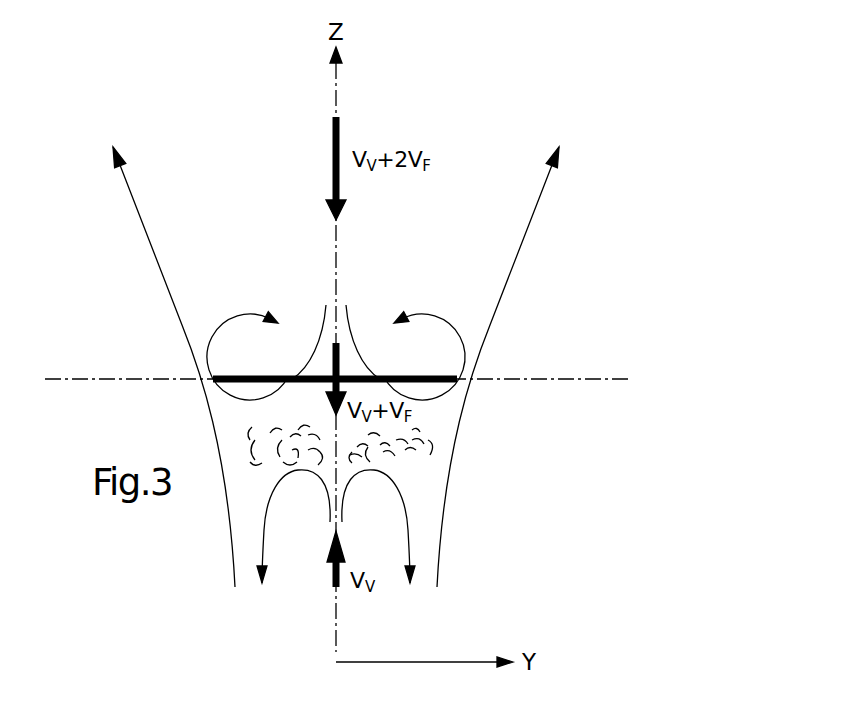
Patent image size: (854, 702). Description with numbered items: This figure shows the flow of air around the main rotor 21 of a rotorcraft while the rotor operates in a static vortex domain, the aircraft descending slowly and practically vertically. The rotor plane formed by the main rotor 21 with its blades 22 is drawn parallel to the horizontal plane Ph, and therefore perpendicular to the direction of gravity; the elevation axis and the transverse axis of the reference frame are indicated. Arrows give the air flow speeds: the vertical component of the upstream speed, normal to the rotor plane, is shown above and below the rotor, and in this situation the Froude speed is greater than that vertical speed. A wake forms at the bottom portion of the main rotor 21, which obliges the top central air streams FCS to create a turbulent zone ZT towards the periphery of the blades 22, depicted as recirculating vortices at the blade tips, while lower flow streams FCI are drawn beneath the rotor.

The main rotor 21 is at (445, 376).
The blades 22 is at (244, 377).
The turbulent zone ZT is at (236, 315).
The top central air streams FCS is at (348, 315).
The lower flow FCI is at (282, 483).
The horizontal plane Ph is at (70, 378).